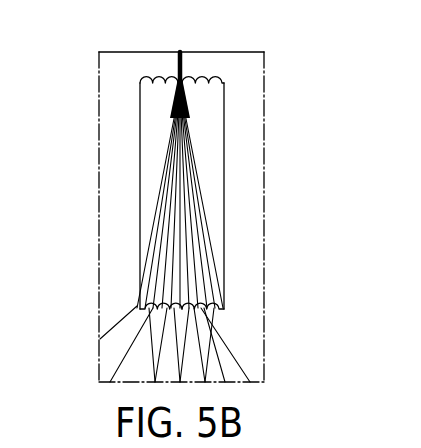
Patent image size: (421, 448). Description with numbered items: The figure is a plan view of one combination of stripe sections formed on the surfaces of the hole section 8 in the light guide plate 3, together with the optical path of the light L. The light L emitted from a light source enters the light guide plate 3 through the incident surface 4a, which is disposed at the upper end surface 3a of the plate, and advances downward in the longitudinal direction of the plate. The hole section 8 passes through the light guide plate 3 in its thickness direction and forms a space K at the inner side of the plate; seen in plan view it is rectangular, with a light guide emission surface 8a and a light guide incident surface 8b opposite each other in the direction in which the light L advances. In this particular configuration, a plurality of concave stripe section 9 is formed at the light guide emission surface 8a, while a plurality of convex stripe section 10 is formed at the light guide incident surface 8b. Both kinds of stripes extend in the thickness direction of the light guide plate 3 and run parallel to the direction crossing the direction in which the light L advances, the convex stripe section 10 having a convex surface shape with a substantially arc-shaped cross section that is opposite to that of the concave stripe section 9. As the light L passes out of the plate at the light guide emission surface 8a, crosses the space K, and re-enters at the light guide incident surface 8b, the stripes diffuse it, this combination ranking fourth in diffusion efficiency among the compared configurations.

The light guide plate 3 is at (88, 177).
The upper end surface 3a is at (121, 51).
The incident surface 4a is at (181, 51).
The concave stripe section 9 is at (148, 80).
The light guide emission surface 8a is at (214, 80).
The hole section 8 is at (236, 188).
The space K is at (212, 150).
The light L is at (209, 227).
The convex stripe section 10 is at (159, 304).
The light guide incident surface 8b is at (218, 304).